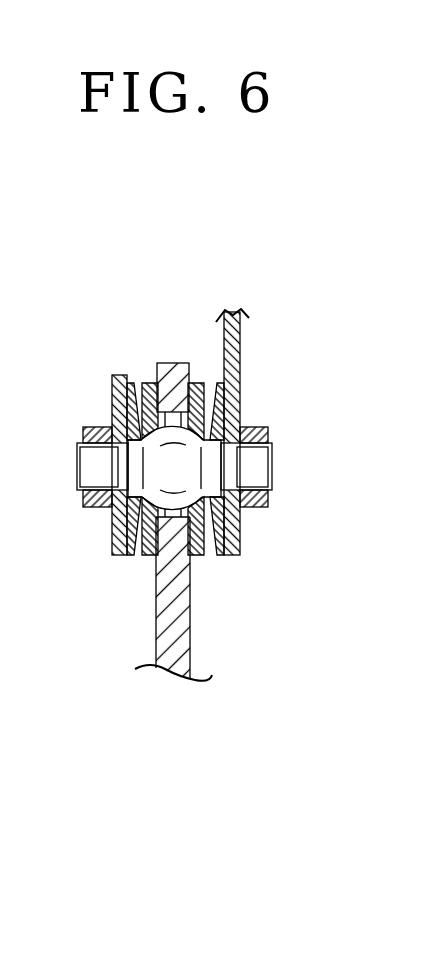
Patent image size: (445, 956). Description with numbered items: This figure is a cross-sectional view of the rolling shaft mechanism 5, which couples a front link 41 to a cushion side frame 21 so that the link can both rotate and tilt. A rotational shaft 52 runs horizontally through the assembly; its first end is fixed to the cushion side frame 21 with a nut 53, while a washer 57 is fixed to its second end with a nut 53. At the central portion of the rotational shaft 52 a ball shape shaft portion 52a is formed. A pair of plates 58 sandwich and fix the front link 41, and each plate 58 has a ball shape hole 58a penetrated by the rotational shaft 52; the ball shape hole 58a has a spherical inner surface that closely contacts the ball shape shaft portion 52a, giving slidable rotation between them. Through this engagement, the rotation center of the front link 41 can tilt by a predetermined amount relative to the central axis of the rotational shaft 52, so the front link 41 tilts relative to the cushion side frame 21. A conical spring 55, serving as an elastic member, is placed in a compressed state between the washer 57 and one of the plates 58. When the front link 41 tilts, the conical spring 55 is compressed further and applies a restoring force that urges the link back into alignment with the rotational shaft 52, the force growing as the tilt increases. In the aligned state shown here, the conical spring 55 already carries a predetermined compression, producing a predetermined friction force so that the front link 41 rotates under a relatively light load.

The rolling shaft mechanism 5 is at (90, 270).
The cushion side frame 21 is at (241, 362).
The front link 41 is at (182, 608).
The rotational shaft 52 is at (263, 478).
The ball shape shaft portion 52a is at (187, 463).
The nut 53 is at (89, 428).
The conical spring 55 is at (142, 436).
The washer 57 is at (112, 380).
The plate 58 is at (199, 383).
The ball shape hole 58a is at (211, 436).